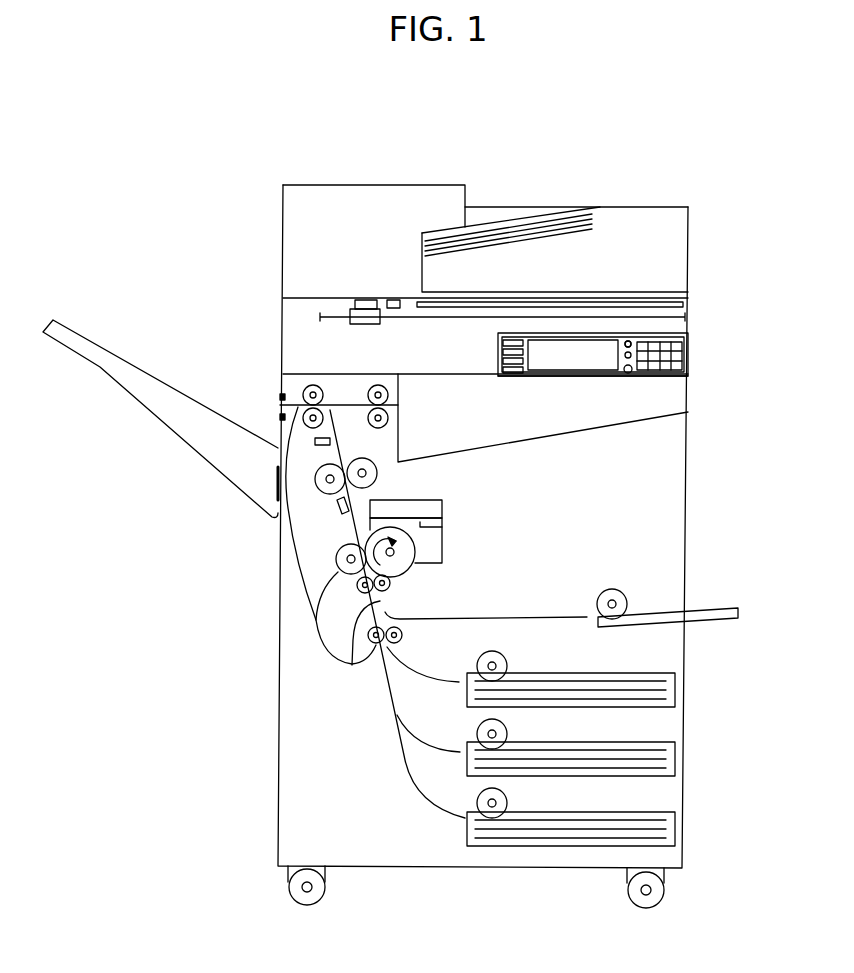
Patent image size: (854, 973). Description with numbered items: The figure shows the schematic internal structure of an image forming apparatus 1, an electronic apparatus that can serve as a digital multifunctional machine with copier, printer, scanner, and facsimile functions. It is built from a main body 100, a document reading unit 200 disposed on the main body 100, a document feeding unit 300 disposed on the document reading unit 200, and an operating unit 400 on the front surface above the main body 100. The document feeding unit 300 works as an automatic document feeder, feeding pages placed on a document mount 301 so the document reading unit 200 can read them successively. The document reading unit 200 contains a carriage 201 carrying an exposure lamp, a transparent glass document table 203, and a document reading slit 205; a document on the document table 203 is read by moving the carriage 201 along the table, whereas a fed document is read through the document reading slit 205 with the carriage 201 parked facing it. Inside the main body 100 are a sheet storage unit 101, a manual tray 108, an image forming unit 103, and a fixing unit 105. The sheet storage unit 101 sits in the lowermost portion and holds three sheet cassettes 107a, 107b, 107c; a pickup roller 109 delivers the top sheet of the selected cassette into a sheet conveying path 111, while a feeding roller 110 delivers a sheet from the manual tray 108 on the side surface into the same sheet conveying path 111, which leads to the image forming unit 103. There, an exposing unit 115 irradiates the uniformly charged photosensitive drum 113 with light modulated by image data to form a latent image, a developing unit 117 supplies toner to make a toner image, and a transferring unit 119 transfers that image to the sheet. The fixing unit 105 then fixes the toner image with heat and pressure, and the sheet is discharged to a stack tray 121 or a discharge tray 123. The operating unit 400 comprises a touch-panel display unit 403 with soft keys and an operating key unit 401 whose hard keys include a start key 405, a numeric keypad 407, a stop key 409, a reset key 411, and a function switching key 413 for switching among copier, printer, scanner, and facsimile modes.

The image forming apparatus 1 is at (104, 180).
The main body 100 is at (662, 541).
The sheet storage unit 101 is at (704, 703).
The image forming unit 103 is at (323, 546).
The fixing unit 105 is at (330, 490).
The sheet cassette 107a is at (672, 684).
The sheet cassette 107b is at (672, 752).
The sheet cassette 107c is at (672, 820).
The manual tray 108 is at (722, 611).
The pickup roller 109 is at (506, 666).
The feeding roller 110 is at (611, 588).
The sheet conveying path 111 is at (353, 666).
The photosensitive drum 113 is at (400, 565).
The exposing unit 115 is at (442, 507).
The developing unit 117 is at (442, 540).
The transferring unit 119 is at (316, 633).
The stack tray 121 is at (204, 465).
The discharge tray 123 is at (540, 438).
The document reading unit 200 is at (306, 327).
The carriage 201 is at (362, 325).
The document table 203 is at (675, 308).
The document reading slit 205 is at (358, 300).
The document feeding unit 300 is at (516, 206).
The document mount 301 is at (612, 207).
The operating unit 400 is at (703, 348).
The operating key unit 401 is at (689, 377).
The display unit 403 is at (552, 352).
The start key 405 is at (628, 373).
The numeric keypad 407 is at (650, 372).
The stop key 409 is at (628, 342).
The reset key 411 is at (628, 341).
The function switching key 413 is at (503, 360).